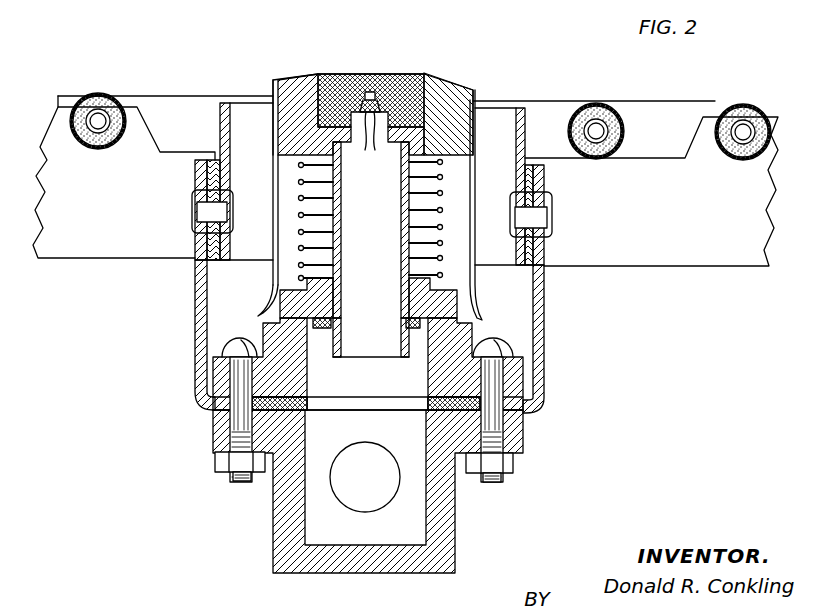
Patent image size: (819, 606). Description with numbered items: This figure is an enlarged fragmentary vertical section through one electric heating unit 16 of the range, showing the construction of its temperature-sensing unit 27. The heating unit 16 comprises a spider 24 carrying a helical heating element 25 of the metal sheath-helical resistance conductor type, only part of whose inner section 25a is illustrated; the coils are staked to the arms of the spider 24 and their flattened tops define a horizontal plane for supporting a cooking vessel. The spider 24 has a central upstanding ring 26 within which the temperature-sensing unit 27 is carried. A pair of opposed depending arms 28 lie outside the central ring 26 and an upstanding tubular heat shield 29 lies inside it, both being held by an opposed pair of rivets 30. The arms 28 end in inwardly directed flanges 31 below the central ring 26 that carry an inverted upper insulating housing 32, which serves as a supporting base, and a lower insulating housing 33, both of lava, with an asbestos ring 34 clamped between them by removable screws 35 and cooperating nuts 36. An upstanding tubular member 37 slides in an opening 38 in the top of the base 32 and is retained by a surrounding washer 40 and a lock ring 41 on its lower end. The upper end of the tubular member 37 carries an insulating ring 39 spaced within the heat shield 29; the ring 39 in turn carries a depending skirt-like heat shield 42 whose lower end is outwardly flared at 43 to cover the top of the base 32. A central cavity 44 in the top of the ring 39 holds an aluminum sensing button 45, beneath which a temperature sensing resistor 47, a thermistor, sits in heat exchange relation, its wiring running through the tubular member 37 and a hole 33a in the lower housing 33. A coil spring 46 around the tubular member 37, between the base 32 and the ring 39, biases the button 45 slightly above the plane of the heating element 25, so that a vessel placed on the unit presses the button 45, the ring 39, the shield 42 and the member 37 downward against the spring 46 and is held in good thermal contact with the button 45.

The heating unit 16 is at (716, 83).
The spider 24 is at (74, 224).
The heating element 25 is at (117, 88).
The inner section 25a is at (715, 168).
The central ring 26 is at (216, 159).
The temperature-sensing unit 27 is at (349, 64).
The depending arms 28 is at (187, 310).
The tubular heat shield 29 is at (229, 103).
The rivets 30 is at (192, 210).
The flanges 31 is at (197, 407).
The upper insulating housing 32 is at (428, 383).
The lower insulating housing 33 is at (306, 510).
The hole 33a is at (390, 492).
The asbestos ring 34 is at (358, 403).
The screws 35 is at (236, 343).
The nuts 36 is at (214, 463).
The tubular member 37 is at (341, 236).
The opening 38 is at (401, 288).
The insulating ring 39 is at (459, 78).
The washer 40 is at (320, 328).
The lock ring 41 is at (334, 325).
The depending tubular heat shield 42 is at (272, 170).
The outwardly flared lower end 43 is at (260, 300).
The central cavity 44 is at (328, 72).
The sensing button 45 is at (418, 72).
The coil spring 46 is at (440, 193).
The temperature sensing resistor 47 is at (374, 92).